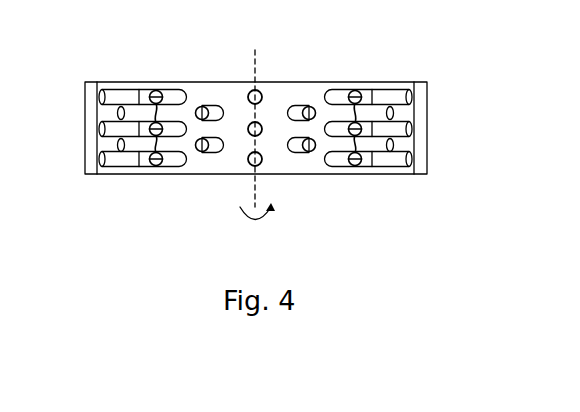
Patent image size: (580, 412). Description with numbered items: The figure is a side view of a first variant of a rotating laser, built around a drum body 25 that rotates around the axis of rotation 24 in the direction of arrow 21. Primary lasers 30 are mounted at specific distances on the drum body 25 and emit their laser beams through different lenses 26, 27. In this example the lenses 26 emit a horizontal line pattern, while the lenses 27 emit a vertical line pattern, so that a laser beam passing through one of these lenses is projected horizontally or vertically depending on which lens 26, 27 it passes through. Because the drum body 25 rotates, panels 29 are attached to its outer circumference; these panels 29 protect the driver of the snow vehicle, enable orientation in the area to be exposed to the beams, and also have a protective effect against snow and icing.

The arrow 21 is at (266, 221).
The axis of rotation 24 is at (256, 56).
The drum body 25 is at (204, 68).
The lenses 26 is at (355, 91).
The lenses 27 is at (312, 107).
The panels 29 is at (92, 100).
The primary lasers 30 is at (170, 91).